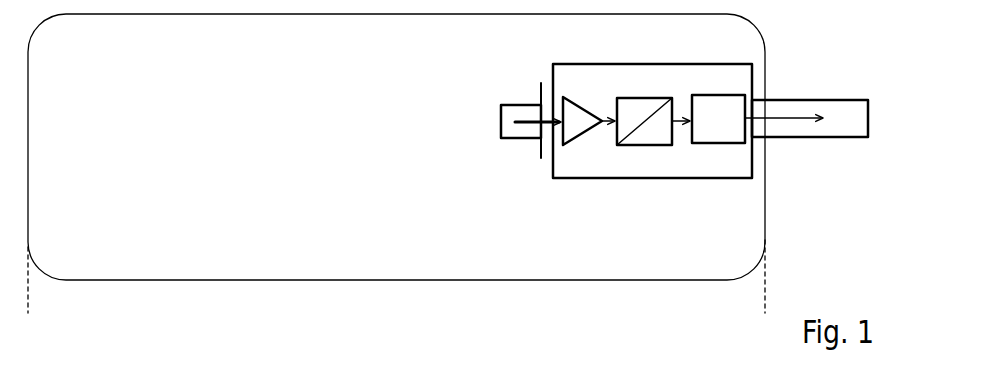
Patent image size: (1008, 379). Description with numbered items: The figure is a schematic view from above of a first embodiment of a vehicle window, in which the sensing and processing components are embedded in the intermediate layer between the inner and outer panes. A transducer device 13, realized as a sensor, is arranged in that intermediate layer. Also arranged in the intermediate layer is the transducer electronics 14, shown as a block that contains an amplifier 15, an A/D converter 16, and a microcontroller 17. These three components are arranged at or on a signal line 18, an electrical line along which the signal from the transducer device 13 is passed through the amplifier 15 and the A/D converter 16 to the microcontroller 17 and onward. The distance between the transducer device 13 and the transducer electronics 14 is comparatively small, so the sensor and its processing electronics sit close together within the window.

The transducer device 13 is at (500, 122).
The transducer electronics 14 is at (667, 216).
The amplifier 15 is at (581, 135).
The A/D converter 16 is at (645, 146).
The microcontroller 17 is at (725, 144).
The signal line 18 is at (797, 138).